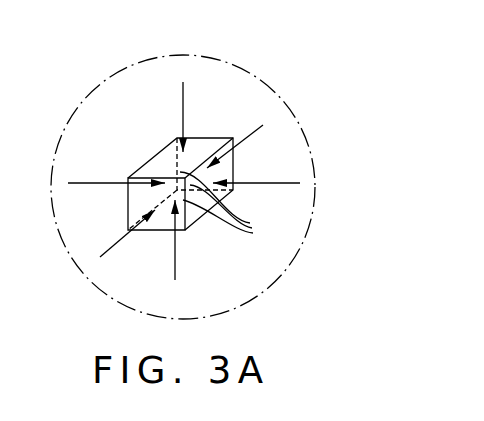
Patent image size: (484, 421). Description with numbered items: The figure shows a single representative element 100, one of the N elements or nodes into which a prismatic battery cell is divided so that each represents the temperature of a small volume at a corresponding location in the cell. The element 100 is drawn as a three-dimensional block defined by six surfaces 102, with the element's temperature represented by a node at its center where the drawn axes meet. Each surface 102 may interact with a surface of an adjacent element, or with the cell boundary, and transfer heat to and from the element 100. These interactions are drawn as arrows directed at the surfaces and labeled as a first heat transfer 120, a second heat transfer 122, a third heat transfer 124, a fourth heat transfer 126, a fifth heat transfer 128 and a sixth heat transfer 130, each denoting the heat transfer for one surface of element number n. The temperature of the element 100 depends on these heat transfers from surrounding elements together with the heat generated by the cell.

The element 100 is at (148, 137).
The surfaces 102 is at (238, 206).
The heat transfer Q_n,1 120 is at (63, 169).
The heat transfer Q_n,2 122 is at (228, 98).
The heat transfer Q_n,3 124 is at (305, 200).
The heat transfer Q_n,4 126 is at (198, 283).
The heat transfer Q_n,5 128 is at (132, 283).
The heat transfer Q_n,6 130 is at (290, 150).